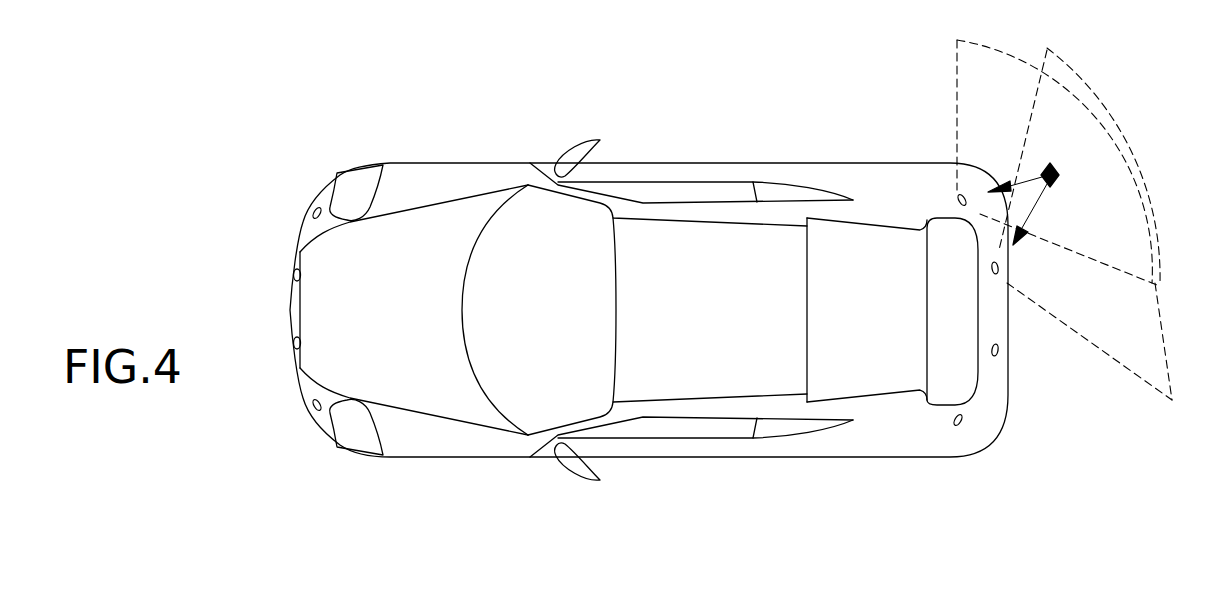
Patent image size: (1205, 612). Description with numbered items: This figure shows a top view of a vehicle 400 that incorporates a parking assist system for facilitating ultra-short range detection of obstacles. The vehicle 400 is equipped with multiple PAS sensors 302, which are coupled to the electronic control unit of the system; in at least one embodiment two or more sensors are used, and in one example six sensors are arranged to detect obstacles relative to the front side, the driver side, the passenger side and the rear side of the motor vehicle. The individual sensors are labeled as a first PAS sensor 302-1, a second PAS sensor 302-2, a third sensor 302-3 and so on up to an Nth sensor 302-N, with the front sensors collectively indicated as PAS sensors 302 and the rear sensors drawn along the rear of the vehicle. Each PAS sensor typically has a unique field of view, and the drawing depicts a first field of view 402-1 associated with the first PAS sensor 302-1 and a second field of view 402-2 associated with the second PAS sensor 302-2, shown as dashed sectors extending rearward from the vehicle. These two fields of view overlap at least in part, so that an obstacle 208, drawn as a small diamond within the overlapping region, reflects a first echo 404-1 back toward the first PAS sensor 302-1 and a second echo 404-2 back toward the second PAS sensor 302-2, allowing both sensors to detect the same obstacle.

The vehicle 400 is at (495, 458).
The PAS sensors 302 is at (300, 230).
The first PAS sensor 302-1 is at (958, 203).
The second PAS sensor 302-2 is at (991, 270).
The PAS sensor 302-3 is at (991, 350).
The Nth PAS sensor 302-N is at (955, 419).
The first field of view 402-1 is at (1027, 61).
The second field of view 402-2 is at (1102, 90).
The first echo 404-1 is at (1008, 183).
The second echo 404-2 is at (1037, 208).
The obstacle 208 is at (1053, 163).